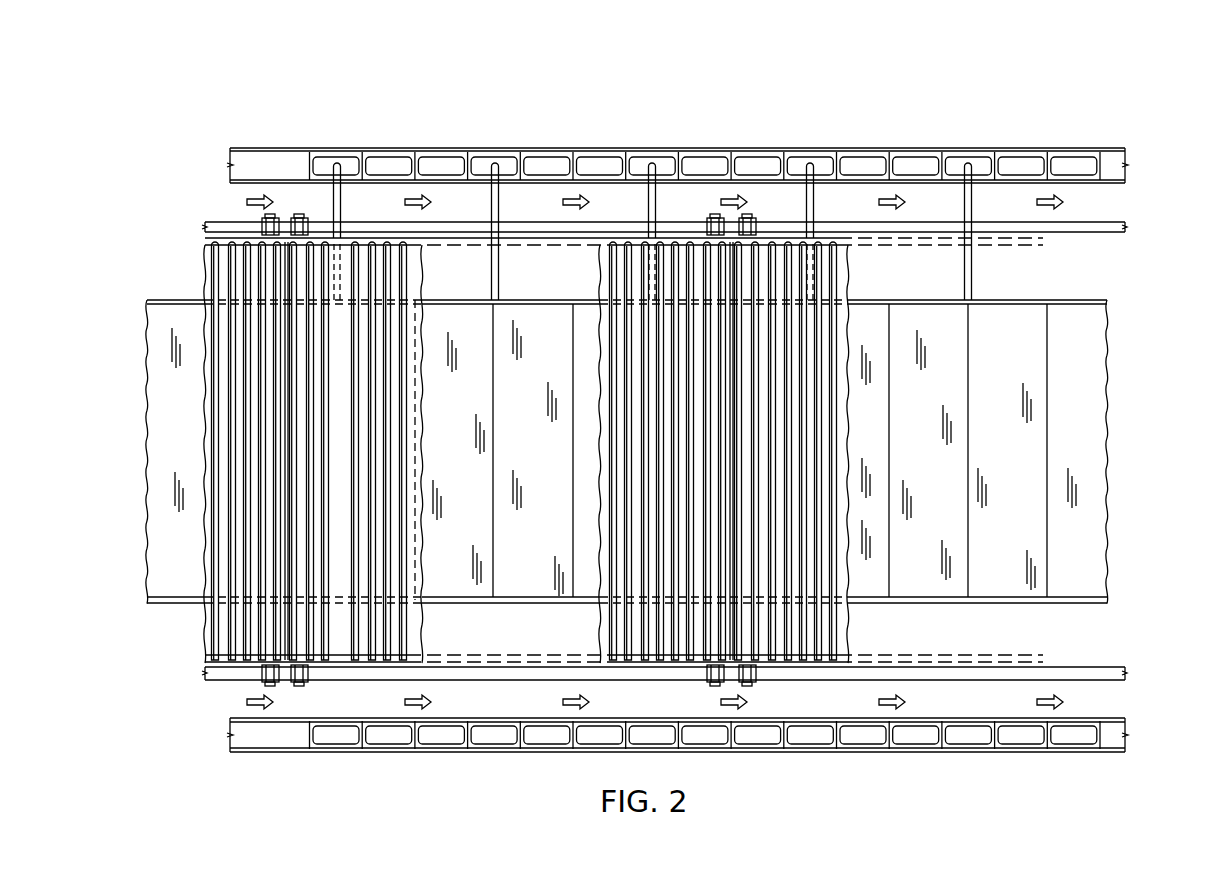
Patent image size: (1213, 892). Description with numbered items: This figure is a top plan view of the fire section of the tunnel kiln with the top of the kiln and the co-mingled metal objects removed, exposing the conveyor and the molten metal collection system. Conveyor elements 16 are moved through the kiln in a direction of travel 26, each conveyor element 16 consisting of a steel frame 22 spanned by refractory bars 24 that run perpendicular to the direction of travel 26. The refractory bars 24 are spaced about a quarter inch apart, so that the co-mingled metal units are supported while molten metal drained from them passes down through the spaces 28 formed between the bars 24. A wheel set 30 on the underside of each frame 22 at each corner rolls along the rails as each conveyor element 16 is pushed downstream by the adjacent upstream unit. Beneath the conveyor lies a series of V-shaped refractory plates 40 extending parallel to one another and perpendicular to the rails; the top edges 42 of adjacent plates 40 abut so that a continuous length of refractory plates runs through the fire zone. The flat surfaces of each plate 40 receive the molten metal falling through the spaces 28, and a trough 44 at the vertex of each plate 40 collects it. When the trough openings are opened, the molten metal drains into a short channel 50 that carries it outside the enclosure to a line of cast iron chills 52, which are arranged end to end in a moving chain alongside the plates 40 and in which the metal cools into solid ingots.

The conveyor element 16 is at (213, 200).
The steel frame 22 is at (473, 221).
The refractory bar 24 is at (205, 258).
The direction of travel 26 is at (720, 212).
The space 28 is at (684, 253).
The wheel set 30 is at (747, 216).
The V-shaped refractory plate 40 is at (185, 576).
The top edge 42 is at (573, 466).
The trough 44 is at (493, 433).
The channel 50 is at (333, 205).
The cast iron chill 52 is at (1092, 168).